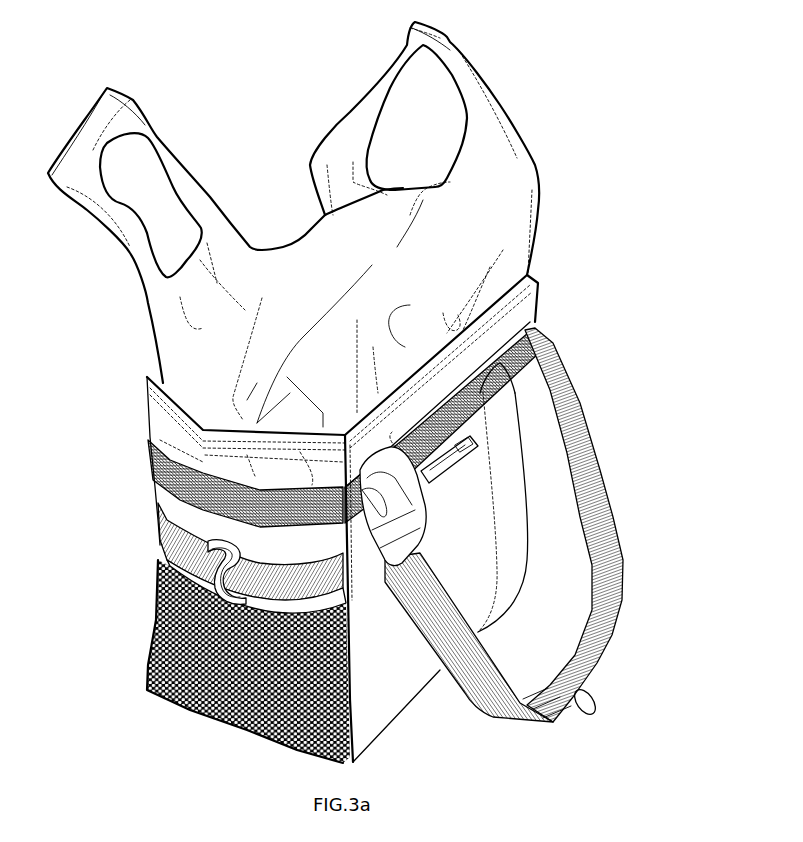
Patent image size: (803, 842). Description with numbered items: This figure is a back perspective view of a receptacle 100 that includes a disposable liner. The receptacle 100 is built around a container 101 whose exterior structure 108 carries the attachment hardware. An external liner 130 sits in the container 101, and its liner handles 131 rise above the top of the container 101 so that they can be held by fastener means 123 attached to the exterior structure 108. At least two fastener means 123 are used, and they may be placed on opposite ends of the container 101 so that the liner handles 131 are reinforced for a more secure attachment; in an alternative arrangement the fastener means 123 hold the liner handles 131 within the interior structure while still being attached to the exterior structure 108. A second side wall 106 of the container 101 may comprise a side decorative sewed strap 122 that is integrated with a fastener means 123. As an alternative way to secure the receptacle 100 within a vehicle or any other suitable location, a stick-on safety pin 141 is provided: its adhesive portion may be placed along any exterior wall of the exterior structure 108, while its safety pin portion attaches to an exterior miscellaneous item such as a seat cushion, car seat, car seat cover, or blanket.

The receptacle 100 is at (707, 305).
The container 101 is at (535, 314).
The second side wall 106 is at (305, 473).
The exterior structure 108 is at (157, 488).
The side decorative sewed strap 122 is at (296, 582).
The fastener means 123 is at (165, 553).
The external liner 130 is at (515, 230).
The liner handle 131 is at (110, 207).
The stick-on safety pin 141 is at (455, 466).